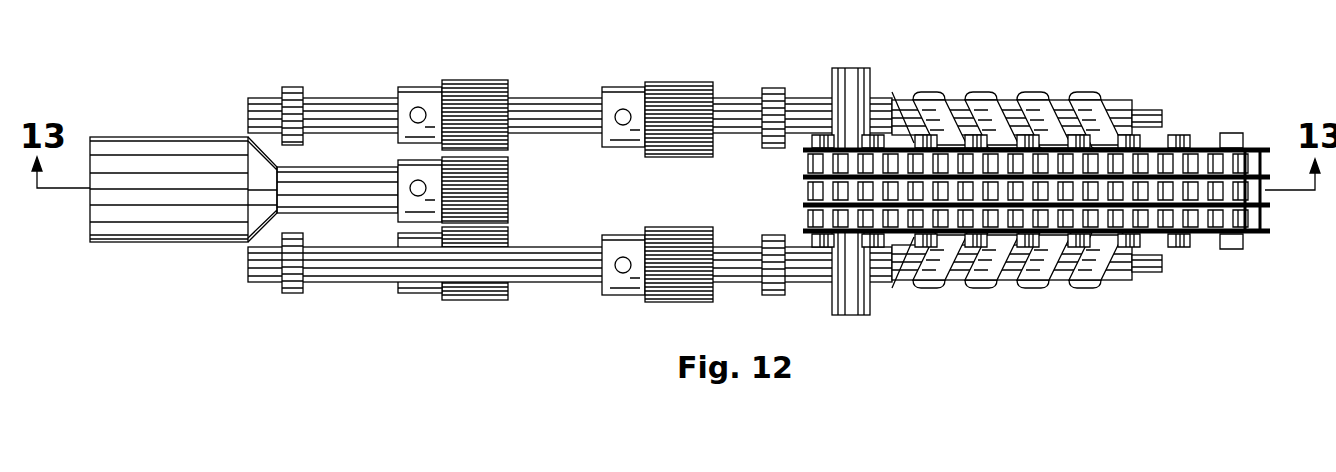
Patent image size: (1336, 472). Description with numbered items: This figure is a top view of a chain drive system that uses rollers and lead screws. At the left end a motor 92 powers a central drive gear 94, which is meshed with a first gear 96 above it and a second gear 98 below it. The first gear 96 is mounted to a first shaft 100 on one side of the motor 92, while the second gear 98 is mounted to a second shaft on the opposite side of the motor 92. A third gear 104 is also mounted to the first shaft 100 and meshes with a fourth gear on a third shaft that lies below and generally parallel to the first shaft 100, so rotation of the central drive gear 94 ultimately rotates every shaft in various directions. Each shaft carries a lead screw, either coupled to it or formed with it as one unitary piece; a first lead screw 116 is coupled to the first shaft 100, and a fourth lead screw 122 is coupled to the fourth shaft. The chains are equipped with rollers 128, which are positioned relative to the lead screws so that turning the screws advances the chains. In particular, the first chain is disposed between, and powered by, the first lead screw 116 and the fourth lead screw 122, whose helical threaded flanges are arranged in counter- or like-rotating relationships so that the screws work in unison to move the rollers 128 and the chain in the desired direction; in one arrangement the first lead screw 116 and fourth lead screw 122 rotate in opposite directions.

The motor 92 is at (130, 163).
The first shaft 100 is at (337, 98).
The first gear 96 is at (470, 80).
The central drive gear 94 is at (510, 188).
The second gear 98 is at (480, 300).
The third gear 104 is at (690, 82).
The rollers 128 is at (925, 100).
The first lead screw 116 is at (1063, 105).
The fourth lead screw 122 is at (1062, 268).